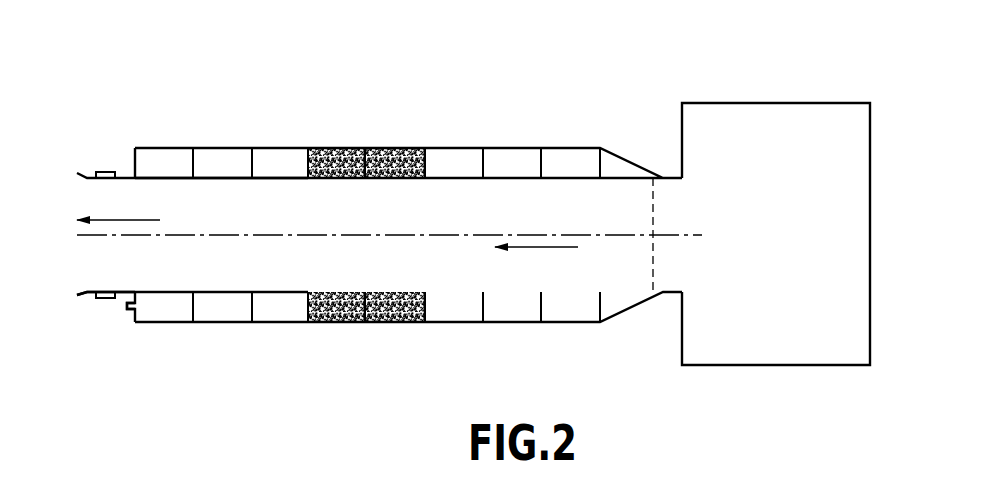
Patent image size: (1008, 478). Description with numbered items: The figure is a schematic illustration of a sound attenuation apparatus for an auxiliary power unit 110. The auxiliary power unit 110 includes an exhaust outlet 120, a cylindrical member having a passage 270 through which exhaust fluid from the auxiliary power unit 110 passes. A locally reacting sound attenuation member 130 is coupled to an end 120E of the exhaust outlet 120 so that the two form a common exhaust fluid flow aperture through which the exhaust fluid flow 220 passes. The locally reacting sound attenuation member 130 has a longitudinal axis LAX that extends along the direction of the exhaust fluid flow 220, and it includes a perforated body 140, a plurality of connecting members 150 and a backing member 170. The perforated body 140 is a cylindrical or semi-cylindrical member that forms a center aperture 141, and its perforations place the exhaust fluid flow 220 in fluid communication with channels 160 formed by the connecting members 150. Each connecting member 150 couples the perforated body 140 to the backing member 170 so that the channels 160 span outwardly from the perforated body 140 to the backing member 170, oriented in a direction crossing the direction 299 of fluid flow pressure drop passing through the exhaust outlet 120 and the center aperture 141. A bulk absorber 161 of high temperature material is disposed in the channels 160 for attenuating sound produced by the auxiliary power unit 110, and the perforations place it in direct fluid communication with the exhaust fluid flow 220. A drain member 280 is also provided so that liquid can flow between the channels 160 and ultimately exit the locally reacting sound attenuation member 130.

The auxiliary power unit 110 is at (753, 103).
The exhaust outlet 120 is at (662, 178).
The end of the exhaust outlet 120E is at (652, 262).
The locally reacting sound attenuation member 130 is at (265, 345).
The perforated body 140 is at (270, 178).
The center aperture 141 is at (123, 252).
The connecting members 150 is at (483, 160).
The channels 160 is at (212, 158).
The bulk absorber 161 is at (340, 148).
The backing member 170 is at (268, 148).
The exhaust fluid flow 220 is at (125, 220).
The passage 270 is at (667, 247).
The drain member 280 is at (127, 306).
The direction of fluid flow pressure drop 299 is at (535, 247).
The longitudinal axis LAX is at (385, 236).